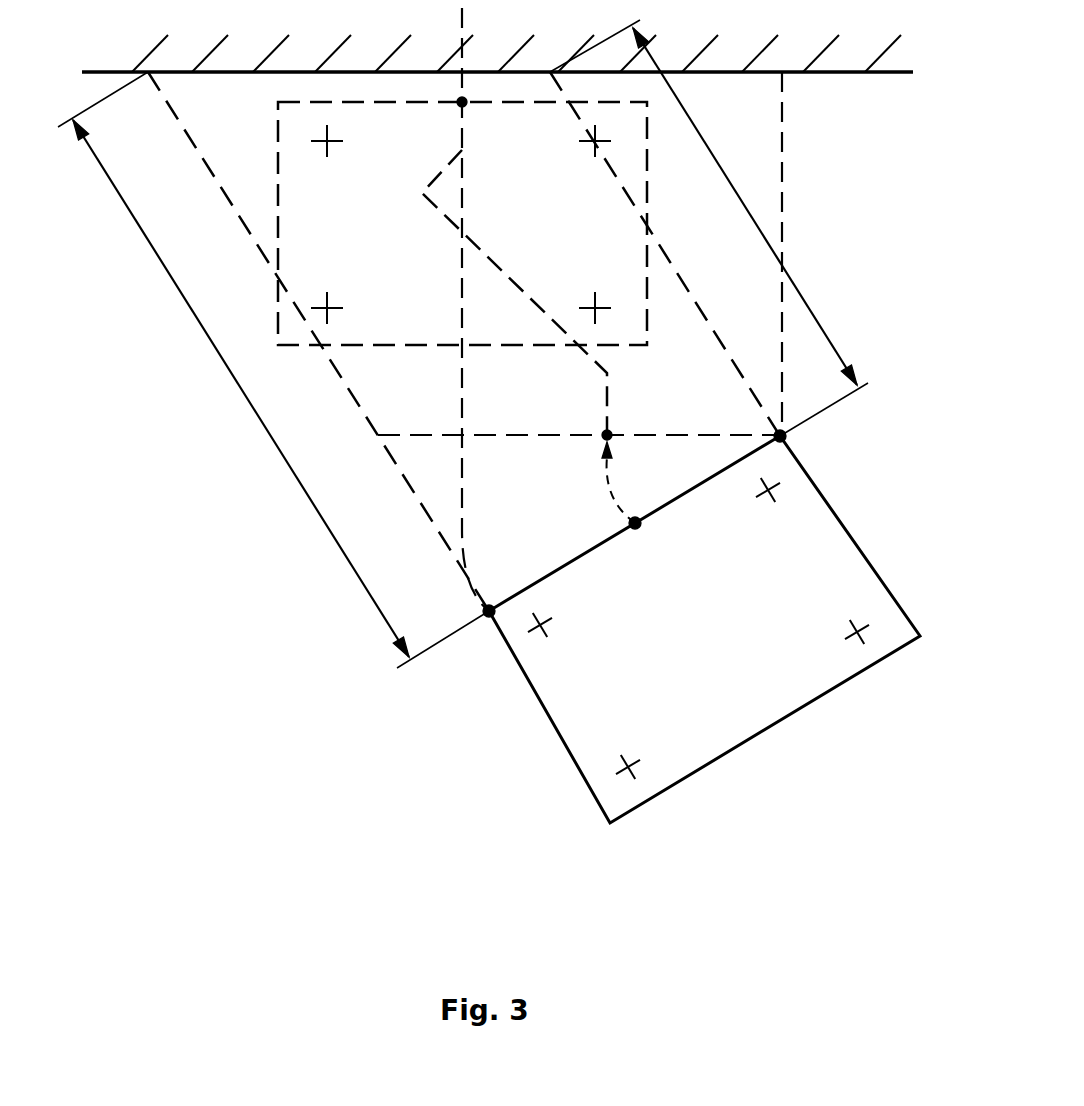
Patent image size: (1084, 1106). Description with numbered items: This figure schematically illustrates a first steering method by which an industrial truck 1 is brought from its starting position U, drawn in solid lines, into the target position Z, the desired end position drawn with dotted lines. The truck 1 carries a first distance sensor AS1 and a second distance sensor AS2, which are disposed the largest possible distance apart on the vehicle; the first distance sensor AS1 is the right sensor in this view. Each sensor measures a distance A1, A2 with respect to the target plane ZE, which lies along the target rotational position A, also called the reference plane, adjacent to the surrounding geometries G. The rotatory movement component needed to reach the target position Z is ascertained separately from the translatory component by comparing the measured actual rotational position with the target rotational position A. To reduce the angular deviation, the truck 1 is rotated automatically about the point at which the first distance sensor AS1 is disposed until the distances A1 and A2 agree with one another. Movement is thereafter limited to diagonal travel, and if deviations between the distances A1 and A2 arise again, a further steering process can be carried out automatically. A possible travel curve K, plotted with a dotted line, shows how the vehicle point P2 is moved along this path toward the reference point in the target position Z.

The target rotational position A is at (513, 65).
The target plane ZE is at (878, 75).
The geometries G is at (112, 77).
The target position Z is at (250, 138).
The distance A1 is at (696, 132).
The distance A2 is at (240, 390).
The possible travel curve K is at (500, 273).
The first distance sensor AS1 is at (788, 437).
The second distance sensor AS2 is at (486, 618).
The vehicle point P2 is at (647, 499).
The industrial truck 1 is at (755, 707).
The starting position U is at (455, 770).